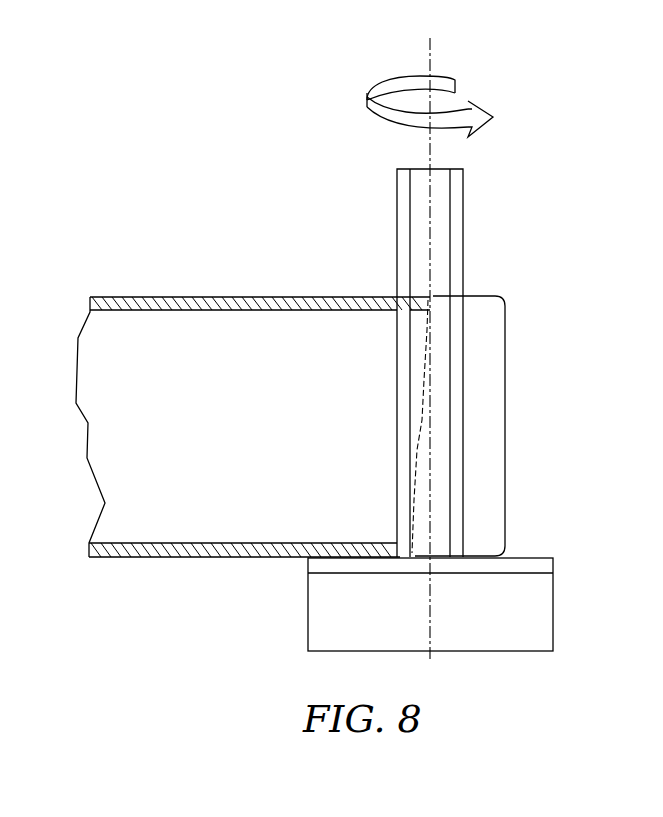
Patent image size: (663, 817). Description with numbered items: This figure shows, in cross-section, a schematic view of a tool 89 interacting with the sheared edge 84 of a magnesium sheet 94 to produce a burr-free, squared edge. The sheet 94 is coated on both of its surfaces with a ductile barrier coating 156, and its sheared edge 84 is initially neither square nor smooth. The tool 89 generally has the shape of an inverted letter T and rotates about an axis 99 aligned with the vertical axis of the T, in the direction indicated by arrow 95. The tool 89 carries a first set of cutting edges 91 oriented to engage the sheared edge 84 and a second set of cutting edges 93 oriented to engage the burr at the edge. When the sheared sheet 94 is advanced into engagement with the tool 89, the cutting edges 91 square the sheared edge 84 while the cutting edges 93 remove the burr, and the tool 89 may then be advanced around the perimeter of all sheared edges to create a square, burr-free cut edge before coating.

The sheared edge 84 is at (505, 392).
The tool 89 is at (446, 352).
The first set of cutting edges 91 is at (455, 257).
The second set of cutting edges 93 is at (527, 558).
The sheet 94 is at (255, 443).
The arrow 95 is at (455, 110).
The axis 99 is at (430, 637).
The ductile barrier coating 156 is at (203, 297).